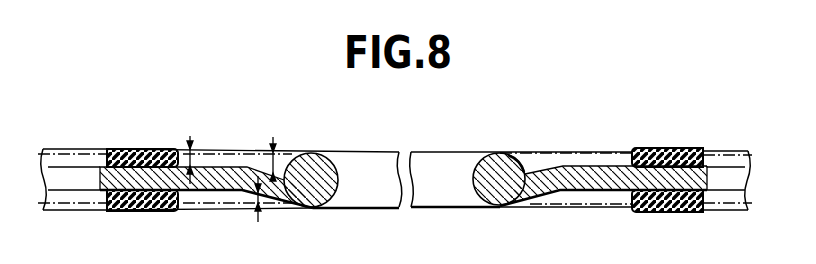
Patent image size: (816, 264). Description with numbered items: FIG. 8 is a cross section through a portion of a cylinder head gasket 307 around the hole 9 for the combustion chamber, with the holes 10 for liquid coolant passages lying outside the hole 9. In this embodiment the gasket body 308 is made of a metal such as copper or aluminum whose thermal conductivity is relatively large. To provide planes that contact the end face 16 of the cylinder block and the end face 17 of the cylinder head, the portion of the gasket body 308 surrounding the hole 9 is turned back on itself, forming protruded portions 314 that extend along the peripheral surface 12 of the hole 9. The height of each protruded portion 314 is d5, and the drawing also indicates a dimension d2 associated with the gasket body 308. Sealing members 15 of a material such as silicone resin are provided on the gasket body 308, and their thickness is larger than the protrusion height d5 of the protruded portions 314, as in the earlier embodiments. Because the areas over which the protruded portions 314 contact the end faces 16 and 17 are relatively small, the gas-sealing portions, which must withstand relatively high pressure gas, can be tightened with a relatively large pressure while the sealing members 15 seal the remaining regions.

The hole for a combustion chamber 9 is at (442, 207).
The holes for liquid coolant passages 10 is at (91, 171).
The peripheral surface of the hole 12 is at (334, 180).
The sealing members 15 is at (140, 157).
The end face of the cylinder block 16 is at (229, 200).
The end face of the cylinder head 17 is at (241, 154).
The connecting assembly 307 is at (455, 143).
The gasket body 308 is at (200, 192).
The protruded portions 314 is at (418, 182).
The clearance dimension d2 is at (192, 162).
The protrusion height d5 is at (276, 160).